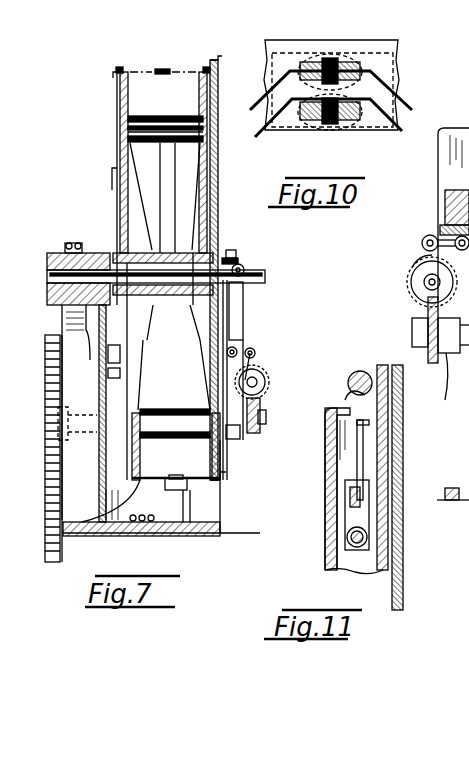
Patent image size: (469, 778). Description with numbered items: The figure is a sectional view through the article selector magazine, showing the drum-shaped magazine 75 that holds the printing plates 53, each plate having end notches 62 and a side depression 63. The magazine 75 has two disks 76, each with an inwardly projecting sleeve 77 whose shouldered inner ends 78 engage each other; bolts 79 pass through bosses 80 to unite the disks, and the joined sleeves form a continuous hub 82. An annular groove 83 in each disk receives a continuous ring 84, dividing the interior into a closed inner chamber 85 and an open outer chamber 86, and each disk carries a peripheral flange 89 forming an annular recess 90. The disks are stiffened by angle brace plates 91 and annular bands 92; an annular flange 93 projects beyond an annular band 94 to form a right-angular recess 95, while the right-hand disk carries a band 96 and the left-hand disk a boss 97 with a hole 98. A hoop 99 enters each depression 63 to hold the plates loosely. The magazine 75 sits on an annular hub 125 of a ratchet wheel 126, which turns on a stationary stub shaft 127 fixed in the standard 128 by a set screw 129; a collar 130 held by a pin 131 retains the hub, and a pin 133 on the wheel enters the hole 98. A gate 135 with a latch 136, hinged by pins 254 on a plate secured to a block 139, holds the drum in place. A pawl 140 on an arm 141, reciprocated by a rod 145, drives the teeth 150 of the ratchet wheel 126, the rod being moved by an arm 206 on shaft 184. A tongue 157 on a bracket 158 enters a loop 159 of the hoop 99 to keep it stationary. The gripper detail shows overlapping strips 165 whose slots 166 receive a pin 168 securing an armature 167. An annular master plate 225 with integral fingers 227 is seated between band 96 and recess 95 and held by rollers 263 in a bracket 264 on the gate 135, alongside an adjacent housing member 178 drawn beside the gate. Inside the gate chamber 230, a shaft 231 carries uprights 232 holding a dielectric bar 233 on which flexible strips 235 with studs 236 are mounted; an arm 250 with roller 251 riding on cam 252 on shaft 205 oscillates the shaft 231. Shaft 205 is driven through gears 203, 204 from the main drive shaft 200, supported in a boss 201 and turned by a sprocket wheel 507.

In FIG. 7, the printing plates 53 is at (170, 276).
In FIG. 7, the notches 62 is at (121, 67).
In FIG. 7, the depression 63 is at (175, 71).
In FIG. 7, the magazine 75 is at (214, 180).
In FIG. 7, the disks 76 is at (127, 133).
In FIG. 11, the disks 76 is at (400, 483).
In FIG. 7, the sleeve 77 is at (155, 262).
In FIG. 7, the inner ends of the sleeves 78 is at (163, 250).
In FIG. 7, the bolts 79 is at (160, 410).
In FIG. 7, the bosses 80 is at (128, 150).
In FIG. 7, the hub 82 is at (62, 312).
In FIG. 7, the annular groove 83 is at (213, 90).
In FIG. 7, the ring 84 is at (130, 118).
In FIG. 7, the inner chamber 85 is at (121, 186).
In FIG. 7, the outer chamber 86 is at (216, 60).
In FIG. 7, the flange 89 is at (117, 75).
In FIG. 7, the annular recess 90 is at (219, 60).
In FIG. 7, the angle brace plates 91 is at (213, 210).
In FIG. 7, the annular bands 92 is at (126, 118).
In FIG. 7, the annular flange 93 is at (115, 258).
In FIG. 7, the annular band 94 is at (130, 250).
In FIG. 7, the annular recess 95 is at (230, 305).
In FIG. 7, the annular band 96 is at (213, 163).
In FIG. 7, the boss 97 is at (92, 362).
In FIG. 7, the hole 98 is at (122, 355).
In FIG. 7, the hoop 99 is at (163, 69).
In FIG. 7, the annular hub 125 is at (112, 255).
In FIG. 7, the ratchet wheel 126 is at (118, 243).
In FIG. 7, the stub shaft 127 is at (47, 262).
In FIG. 7, the standard 128 is at (47, 289).
In FIG. 7, the set screw 129 is at (70, 243).
In FIG. 7, the collar 130 is at (236, 262).
In FIG. 7, the pin 131 is at (244, 270).
In FIG. 7, the pin 133 is at (122, 368).
In FIG. 7, the gate 135 is at (243, 320).
In FIG. 11, the gate 135 is at (440, 165).
In FIG. 7, the latch 136 is at (232, 255).
In FIG. 11, the block 139 is at (455, 488).
In FIG. 7, the pawl 140 is at (97, 382).
In FIG. 7, the arm 141 is at (92, 322).
In FIG. 7, the rod 145 is at (58, 420).
In FIG. 7, the teeth 150 is at (117, 171).
In FIG. 7, the tongue 157 is at (188, 486).
In FIG. 7, the bracket 158 is at (135, 500).
In FIG. 7, the loop 159 is at (188, 492).
In FIG. 10, the strip 165 is at (255, 134).
In FIG. 10, the slot 166 is at (325, 62).
In FIG. 10, the armature 167 is at (370, 74).
In FIG. 10, the pin 168 is at (332, 58).
In FIG. 11, the housing 178 is at (440, 190).
In FIG. 11, the shaft 184 is at (468, 480).
In FIG. 11, the main drive shaft 200 is at (412, 324).
In FIG. 11, the boss 201 is at (447, 390).
In FIG. 7, the gear 203 is at (258, 435).
In FIG. 11, the gear 203 is at (438, 363).
In FIG. 11, the gear 204 is at (412, 266).
In FIG. 7, the shaft 205 is at (256, 396).
In FIG. 11, the shaft 205 is at (424, 280).
In FIG. 7, the arm 206 is at (62, 472).
In FIG. 7, the master plate 225 is at (218, 195).
In FIG. 11, the finger 227 is at (390, 430).
In FIG. 11, the chamber 230 is at (363, 452).
In FIG. 11, the shaft 231 is at (440, 218).
In FIG. 11, the uprights 232 is at (336, 548).
In FIG. 11, the bar 233 is at (348, 515).
In FIG. 11, the flexible strips 235 is at (350, 496).
In FIG. 11, the studs 236 is at (345, 398).
In FIG. 7, the arm 250 is at (246, 340).
In FIG. 11, the arm 250 is at (440, 229).
In FIG. 7, the roller 251 is at (256, 353).
In FIG. 11, the roller 251 is at (422, 243).
In FIG. 7, the cam 252 is at (262, 382).
In FIG. 11, the cam 252 is at (432, 298).
In FIG. 7, the pins 254 is at (245, 354).
In FIG. 11, the rollers 263 is at (358, 371).
In FIG. 11, the bracket 264 is at (337, 460).
In FIG. 7, the sprocket wheel 507 is at (45, 530).